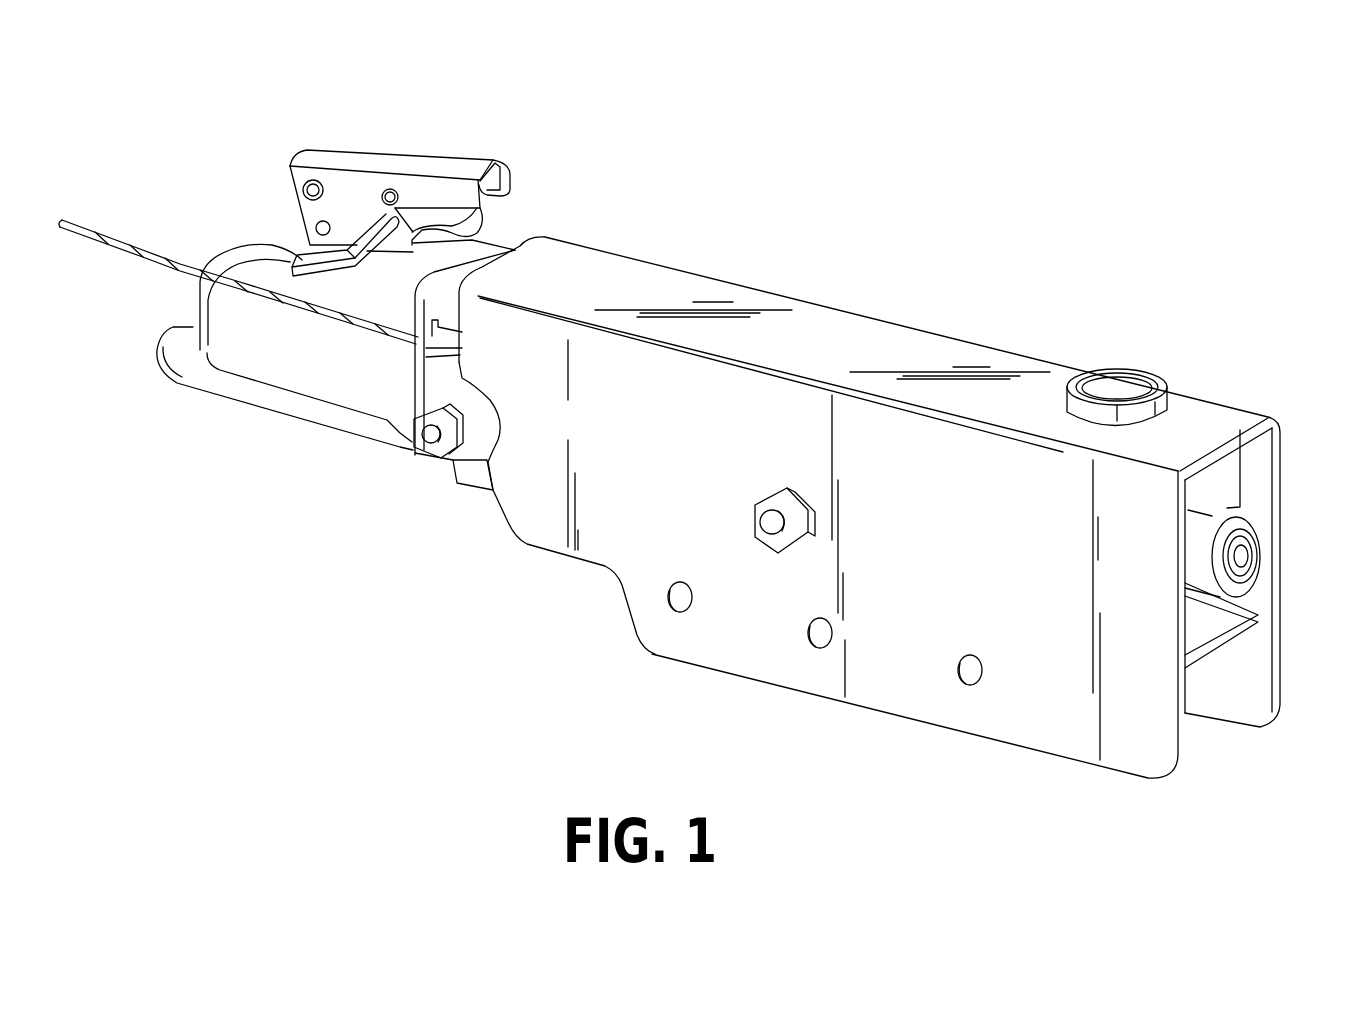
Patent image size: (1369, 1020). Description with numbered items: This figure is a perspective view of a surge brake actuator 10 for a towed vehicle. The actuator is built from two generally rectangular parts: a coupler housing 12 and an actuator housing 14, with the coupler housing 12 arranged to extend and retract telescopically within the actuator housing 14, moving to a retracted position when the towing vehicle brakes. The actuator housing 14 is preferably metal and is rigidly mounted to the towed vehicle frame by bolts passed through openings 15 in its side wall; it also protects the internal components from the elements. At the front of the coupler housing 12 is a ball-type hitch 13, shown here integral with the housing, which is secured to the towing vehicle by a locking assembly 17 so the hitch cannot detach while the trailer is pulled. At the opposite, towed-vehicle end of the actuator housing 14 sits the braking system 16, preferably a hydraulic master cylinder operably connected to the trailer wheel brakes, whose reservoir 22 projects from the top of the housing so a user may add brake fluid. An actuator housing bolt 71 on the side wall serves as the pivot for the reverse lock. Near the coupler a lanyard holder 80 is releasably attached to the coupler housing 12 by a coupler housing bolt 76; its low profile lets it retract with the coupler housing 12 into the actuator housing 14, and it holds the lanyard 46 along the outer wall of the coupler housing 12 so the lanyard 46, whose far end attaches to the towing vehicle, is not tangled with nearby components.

The surge brake actuator 10 is at (772, 180).
The coupler housing 12 is at (232, 408).
The ball-type hitch 13 is at (253, 245).
The actuator housing 14 is at (862, 315).
The openings 15 is at (668, 607).
The braking system 16 is at (1258, 527).
The locking assembly 17 is at (390, 160).
The reservoir 22 is at (1122, 383).
The lanyard 46 is at (145, 266).
The actuator housing bolt 71 is at (768, 528).
The coupler housing bolt 76 is at (432, 456).
The lanyard holder 80 is at (440, 392).